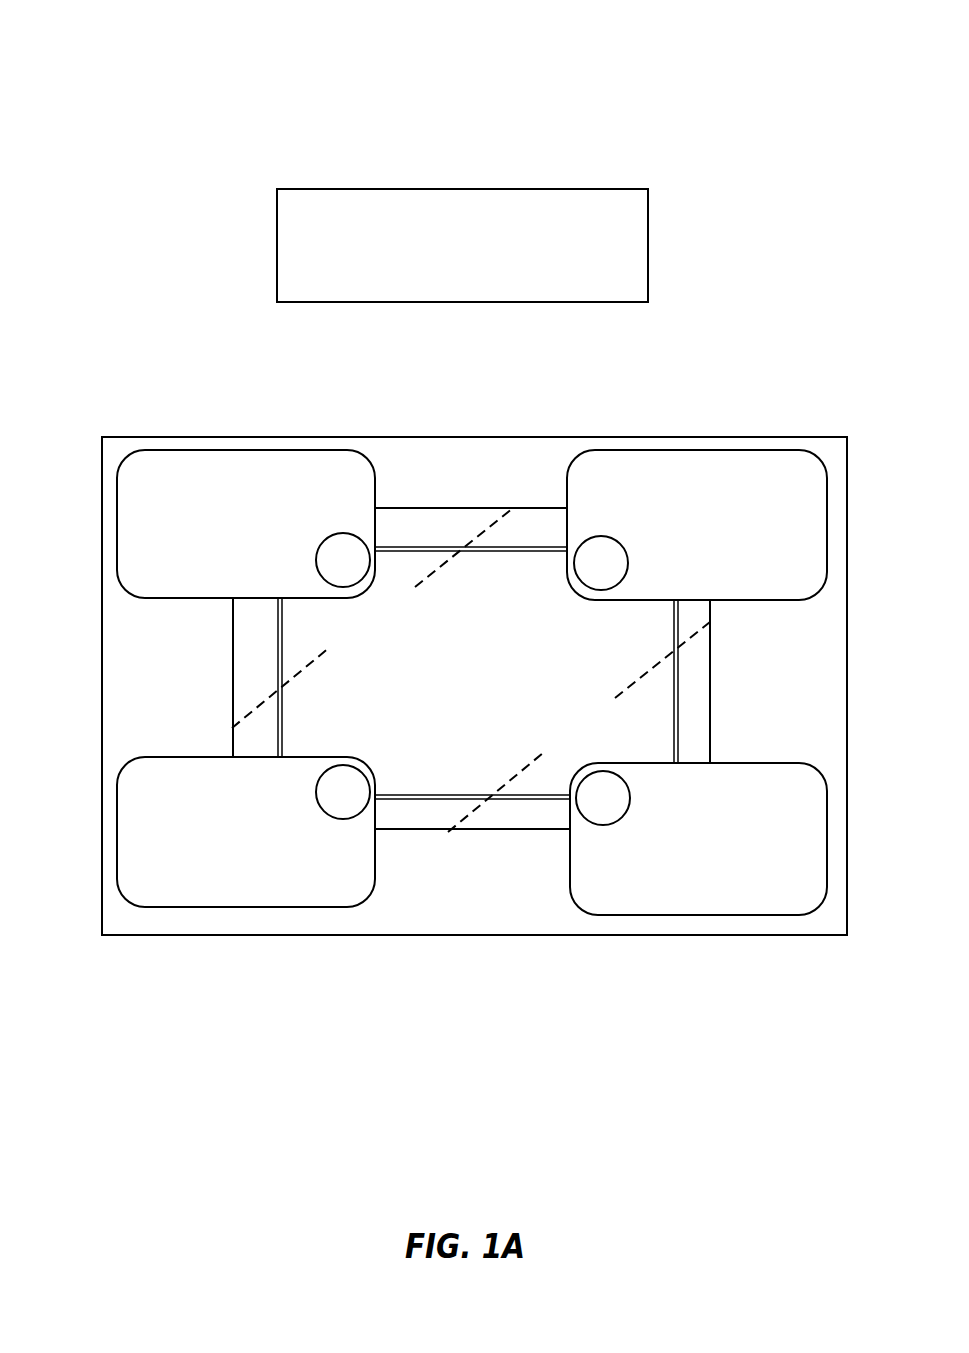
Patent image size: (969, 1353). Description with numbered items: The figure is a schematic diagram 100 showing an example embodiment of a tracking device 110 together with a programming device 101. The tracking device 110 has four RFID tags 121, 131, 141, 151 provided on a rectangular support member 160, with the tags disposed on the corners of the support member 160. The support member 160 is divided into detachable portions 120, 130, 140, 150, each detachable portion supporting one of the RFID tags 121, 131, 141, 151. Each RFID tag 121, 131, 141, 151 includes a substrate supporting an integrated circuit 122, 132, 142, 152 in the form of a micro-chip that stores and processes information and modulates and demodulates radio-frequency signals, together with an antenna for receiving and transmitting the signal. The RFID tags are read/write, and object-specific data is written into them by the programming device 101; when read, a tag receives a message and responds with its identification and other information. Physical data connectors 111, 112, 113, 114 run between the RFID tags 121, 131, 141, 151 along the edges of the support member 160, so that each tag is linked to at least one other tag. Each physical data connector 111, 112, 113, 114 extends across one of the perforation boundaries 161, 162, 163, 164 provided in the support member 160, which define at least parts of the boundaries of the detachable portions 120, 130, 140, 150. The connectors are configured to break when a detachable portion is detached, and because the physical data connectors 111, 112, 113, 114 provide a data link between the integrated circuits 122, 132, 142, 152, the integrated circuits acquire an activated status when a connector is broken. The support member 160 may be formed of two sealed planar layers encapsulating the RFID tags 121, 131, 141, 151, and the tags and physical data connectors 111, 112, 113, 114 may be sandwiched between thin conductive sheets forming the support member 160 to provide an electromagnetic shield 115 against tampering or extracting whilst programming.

The schematic diagram 100 is at (170, 100).
The programming device 101 is at (462, 245).
The tracking device 110 is at (78, 686).
The physical data connector 111 is at (403, 550).
The physical data connector 112 is at (675, 723).
The physical data connector 113 is at (407, 797).
The physical data connector 114 is at (280, 638).
The electromagnetic shield 115 is at (460, 935).
The detachable portion 120 is at (180, 408).
The RFID tag 121 is at (246, 524).
The integrated circuit 122 is at (345, 533).
The detachable portion 130 is at (783, 400).
The RFID tag 131 is at (697, 525).
The integrated circuit 132 is at (598, 536).
The detachable portion 140 is at (768, 962).
The RFID tag 141 is at (698, 839).
The integrated circuit 142 is at (600, 825).
The detachable portion 150 is at (160, 950).
The RFID tag 151 is at (246, 832).
The integrated circuit 152 is at (343, 819).
The support member 160 is at (477, 661).
The perforation boundary 161 is at (475, 538).
The perforation boundary 162 is at (683, 642).
The perforation boundary 163 is at (475, 808).
The perforation boundary 164 is at (260, 703).